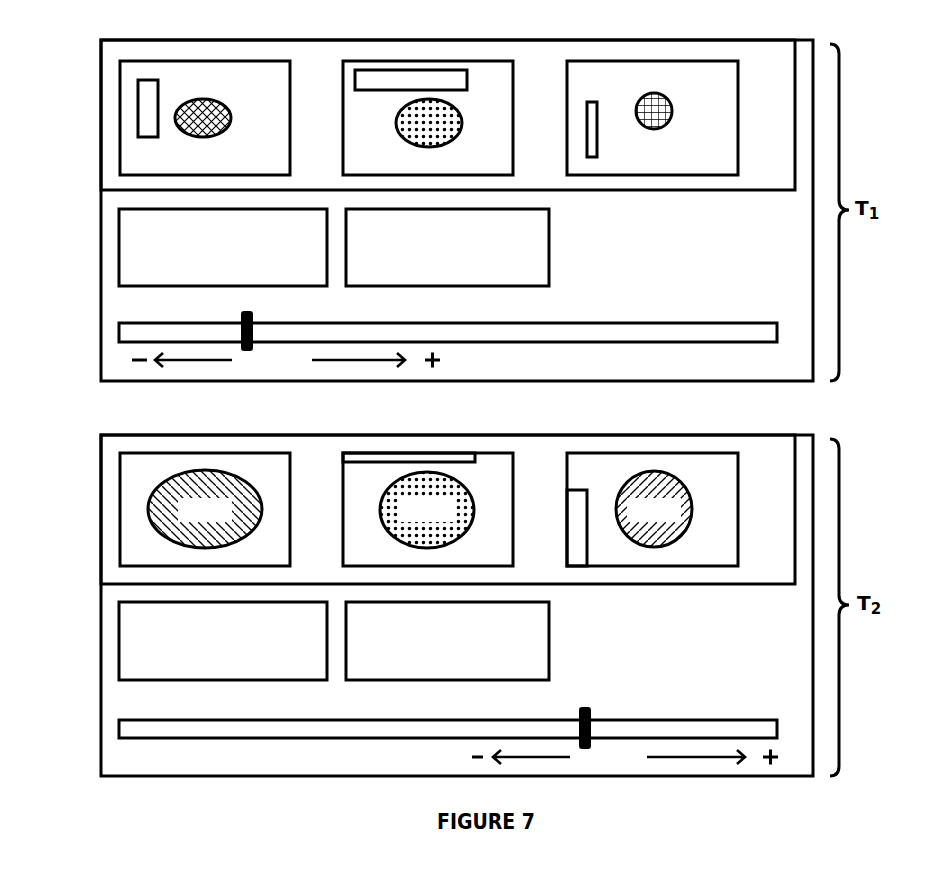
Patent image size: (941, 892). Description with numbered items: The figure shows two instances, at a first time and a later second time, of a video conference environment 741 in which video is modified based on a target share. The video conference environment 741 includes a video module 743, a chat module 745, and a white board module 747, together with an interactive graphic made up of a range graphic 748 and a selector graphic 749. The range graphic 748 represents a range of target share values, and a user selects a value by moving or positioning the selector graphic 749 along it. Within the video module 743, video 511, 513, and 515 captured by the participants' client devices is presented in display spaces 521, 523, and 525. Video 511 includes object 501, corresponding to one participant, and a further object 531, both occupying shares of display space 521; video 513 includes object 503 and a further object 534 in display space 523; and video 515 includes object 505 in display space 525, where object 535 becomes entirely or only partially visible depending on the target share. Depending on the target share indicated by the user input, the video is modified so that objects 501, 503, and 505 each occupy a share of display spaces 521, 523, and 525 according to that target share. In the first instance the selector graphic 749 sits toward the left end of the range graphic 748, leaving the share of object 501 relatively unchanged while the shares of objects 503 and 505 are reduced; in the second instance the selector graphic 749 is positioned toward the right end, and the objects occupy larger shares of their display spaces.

The object 501 is at (231, 111).
The object 503 is at (462, 112).
The object 505 is at (668, 99).
The video 511 is at (291, 133).
The video 513 is at (514, 133).
The video 515 is at (739, 133).
The display space 521 is at (278, 166).
The display space 523 is at (503, 165).
The display space 525 is at (724, 165).
The object 531 is at (150, 138).
The tracked object in second window 534 is at (378, 91).
The object 535 is at (598, 112).
The video conference environment 741 is at (645, 310).
The video module 743 is at (782, 178).
The chat module 745 is at (293, 260).
The white board module 747 is at (537, 260).
The range graphic 748 is at (487, 343).
The selector graphic 749 is at (252, 351).